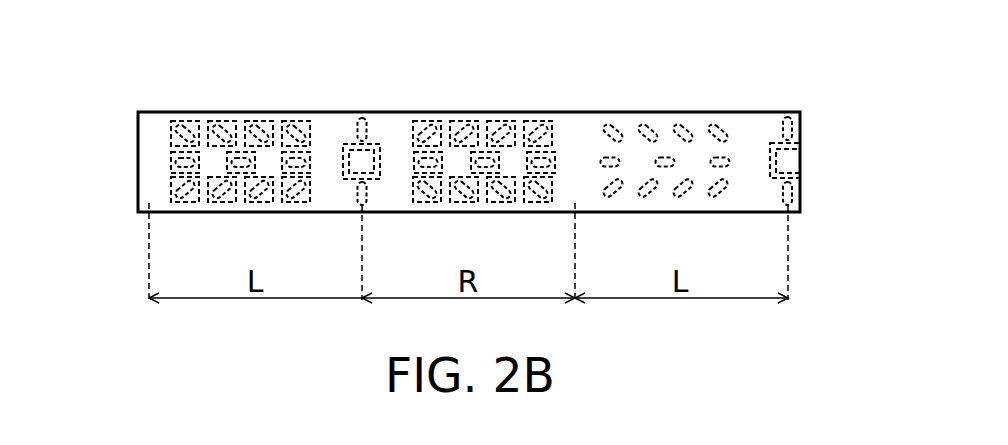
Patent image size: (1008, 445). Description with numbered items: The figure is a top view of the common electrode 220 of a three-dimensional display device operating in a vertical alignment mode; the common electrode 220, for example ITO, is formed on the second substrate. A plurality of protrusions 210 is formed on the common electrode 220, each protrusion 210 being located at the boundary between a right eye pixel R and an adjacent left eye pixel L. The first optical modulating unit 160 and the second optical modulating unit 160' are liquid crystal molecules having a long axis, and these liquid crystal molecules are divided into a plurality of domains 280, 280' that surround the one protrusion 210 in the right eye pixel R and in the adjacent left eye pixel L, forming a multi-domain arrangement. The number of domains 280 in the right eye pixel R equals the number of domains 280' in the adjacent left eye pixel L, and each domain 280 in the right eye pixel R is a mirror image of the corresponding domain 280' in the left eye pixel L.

The common electrode 220 is at (143, 162).
The protrusion 210 is at (356, 134).
The domain 280 is at (484, 121).
The domain 280' is at (240, 123).
The first optical modulating unit 160 is at (425, 98).
The second optical modulating unit 160' is at (304, 97).